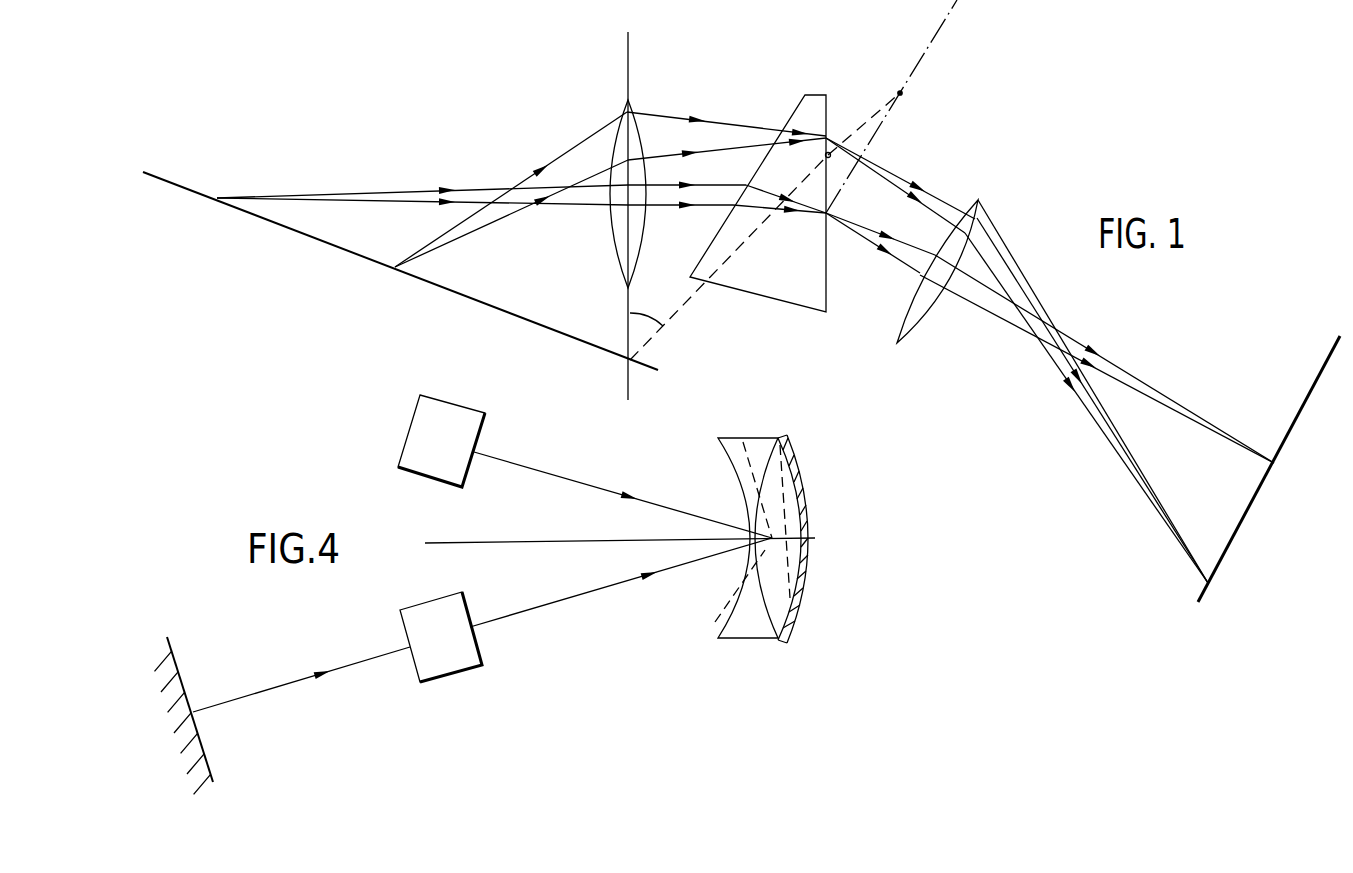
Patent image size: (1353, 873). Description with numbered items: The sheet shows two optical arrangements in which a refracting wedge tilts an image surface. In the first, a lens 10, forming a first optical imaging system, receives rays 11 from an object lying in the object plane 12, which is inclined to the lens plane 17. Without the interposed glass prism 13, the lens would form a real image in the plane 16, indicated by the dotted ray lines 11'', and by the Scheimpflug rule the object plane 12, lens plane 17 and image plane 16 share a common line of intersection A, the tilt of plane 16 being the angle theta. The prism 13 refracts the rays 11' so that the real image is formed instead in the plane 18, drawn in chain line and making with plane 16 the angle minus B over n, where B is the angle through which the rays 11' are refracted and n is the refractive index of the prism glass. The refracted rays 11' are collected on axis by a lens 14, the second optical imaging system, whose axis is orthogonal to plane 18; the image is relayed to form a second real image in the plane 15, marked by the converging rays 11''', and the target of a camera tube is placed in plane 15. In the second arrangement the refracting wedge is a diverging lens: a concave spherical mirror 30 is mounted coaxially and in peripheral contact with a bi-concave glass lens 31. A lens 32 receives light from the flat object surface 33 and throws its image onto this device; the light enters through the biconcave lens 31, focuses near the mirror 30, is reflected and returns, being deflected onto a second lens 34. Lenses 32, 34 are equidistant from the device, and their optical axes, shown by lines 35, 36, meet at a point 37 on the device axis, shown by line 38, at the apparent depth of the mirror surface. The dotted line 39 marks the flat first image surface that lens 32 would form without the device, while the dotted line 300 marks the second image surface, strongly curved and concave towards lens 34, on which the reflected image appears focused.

In FIG. 1, the lens 10 is at (612, 130).
In FIG. 1, the rays 11 is at (422, 189).
In FIG. 1, the rays 11' is at (802, 192).
In FIG. 1, the dotted ray lines 11'' is at (803, 146).
In FIG. 1, the light rays focused onto mirror 11''' is at (1097, 391).
In FIG. 1, the object plane 12 is at (460, 294).
In FIG. 1, the glass prism 13 is at (777, 287).
In FIG. 1, the lens 14 is at (925, 320).
In FIG. 1, the image plane 15 is at (1320, 364).
In FIG. 1, the image plane 16 is at (705, 286).
In FIG. 1, the lens plane 17 is at (630, 72).
In FIG. 1, the real image plane 18 is at (875, 137).
In FIG. 1, the common line of intersection A is at (605, 371).
In FIG. 1, the angle of refraction B is at (901, 94).
In FIG. 4, the concave spherical mirror 30 is at (793, 437).
In FIG. 4, the second image surface 300 is at (779, 480).
In FIG. 4, the bi-concave glass lens 31 is at (733, 445).
In FIG. 4, the lens 32 is at (453, 653).
In FIG. 4, the object surface 33 is at (178, 655).
In FIG. 4, the lens 34 is at (453, 454).
In FIG. 4, the optical axis line 35 is at (622, 596).
In FIG. 4, the optical axis line 36 is at (630, 493).
In FIG. 4, the point 37 is at (772, 538).
In FIG. 4, the axis line 38 is at (558, 545).
In FIG. 4, the first image surface 39 is at (780, 548).